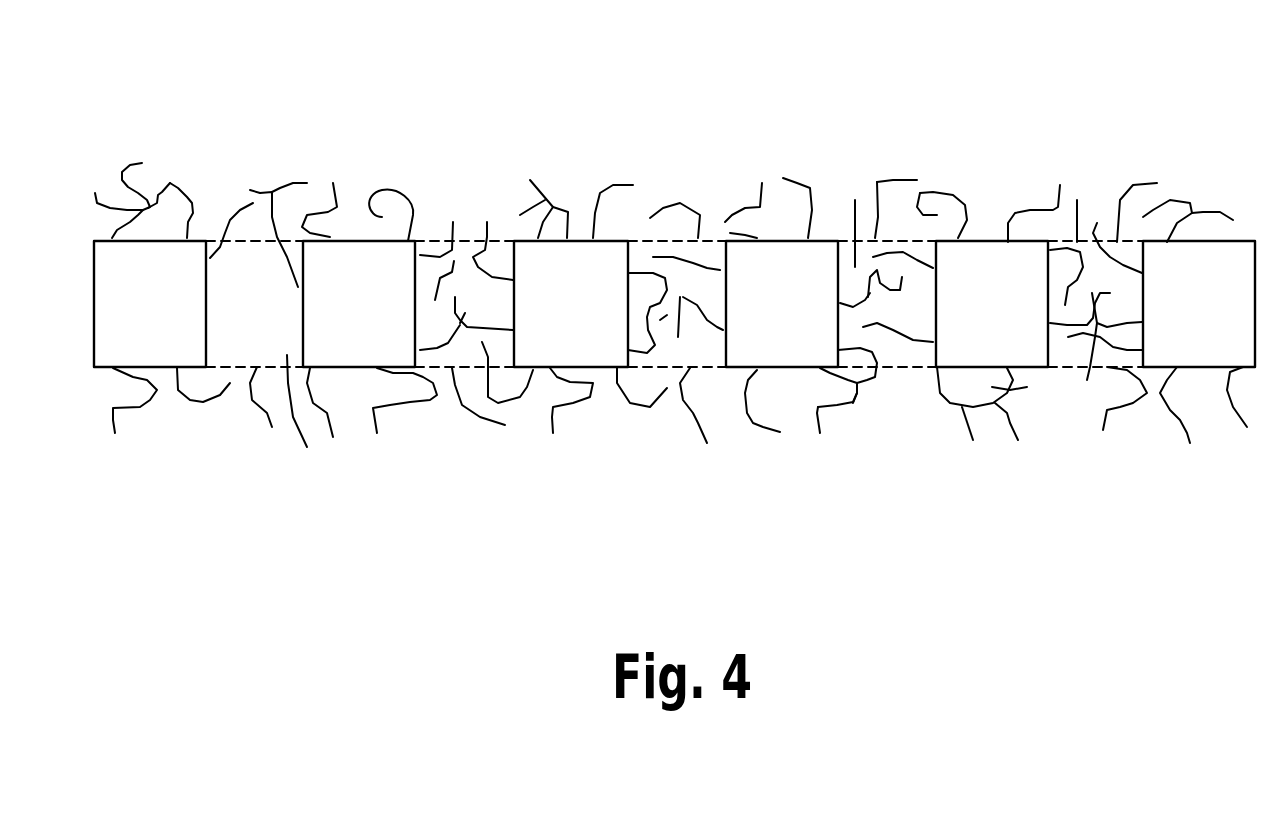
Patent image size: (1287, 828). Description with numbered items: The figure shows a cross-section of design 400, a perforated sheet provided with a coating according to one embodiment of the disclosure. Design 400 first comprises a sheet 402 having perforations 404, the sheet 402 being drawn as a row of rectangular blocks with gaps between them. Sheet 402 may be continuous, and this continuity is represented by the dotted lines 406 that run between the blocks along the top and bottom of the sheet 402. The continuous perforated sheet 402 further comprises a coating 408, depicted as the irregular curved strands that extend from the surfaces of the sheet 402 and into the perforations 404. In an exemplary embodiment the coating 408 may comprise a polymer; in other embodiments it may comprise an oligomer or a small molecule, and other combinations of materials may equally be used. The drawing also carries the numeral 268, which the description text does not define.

The design 400 is at (681, 145).
The sheet 402 is at (1226, 318).
The perforations 404 is at (855, 230).
The dotted lines 406 is at (1077, 220).
The coating 408 is at (414, 205).
The fiber 268 is at (973, 440).